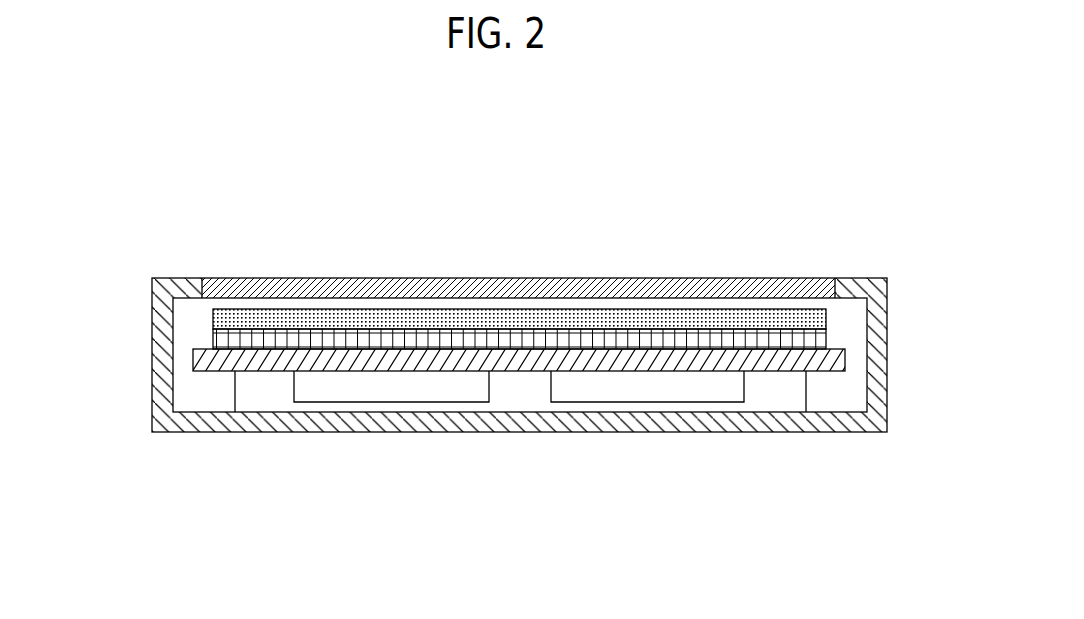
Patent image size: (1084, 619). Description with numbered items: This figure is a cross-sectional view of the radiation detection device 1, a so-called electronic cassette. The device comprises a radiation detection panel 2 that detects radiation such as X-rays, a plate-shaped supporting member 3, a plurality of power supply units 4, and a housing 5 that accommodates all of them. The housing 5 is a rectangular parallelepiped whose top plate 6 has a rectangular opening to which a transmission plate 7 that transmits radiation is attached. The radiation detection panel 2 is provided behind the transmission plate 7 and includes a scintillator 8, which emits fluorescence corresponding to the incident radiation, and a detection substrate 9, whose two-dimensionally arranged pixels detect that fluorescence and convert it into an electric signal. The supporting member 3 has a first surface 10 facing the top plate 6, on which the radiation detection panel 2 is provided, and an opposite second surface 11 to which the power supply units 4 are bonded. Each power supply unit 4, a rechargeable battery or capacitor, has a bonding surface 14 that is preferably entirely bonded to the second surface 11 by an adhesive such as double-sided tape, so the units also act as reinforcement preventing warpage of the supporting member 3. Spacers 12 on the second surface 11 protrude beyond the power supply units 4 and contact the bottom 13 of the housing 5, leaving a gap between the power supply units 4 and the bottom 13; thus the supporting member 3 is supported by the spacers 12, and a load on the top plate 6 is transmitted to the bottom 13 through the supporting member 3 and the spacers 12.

The radiation detection device 1 is at (166, 136).
The radiation detection panel 2 is at (440, 336).
The supporting member 3 is at (846, 357).
The power supply unit 4 is at (390, 393).
The housing 5 is at (881, 273).
The top plate 6 is at (849, 288).
The transmission plate 7 is at (780, 288).
The scintillator 8 is at (213, 340).
The detection substrate 9 is at (213, 318).
The first surface 10 is at (830, 338).
The second surface 11 is at (834, 373).
The spacer 12 is at (778, 402).
The bottom 13 is at (835, 428).
The bonding surface 14 is at (313, 372).